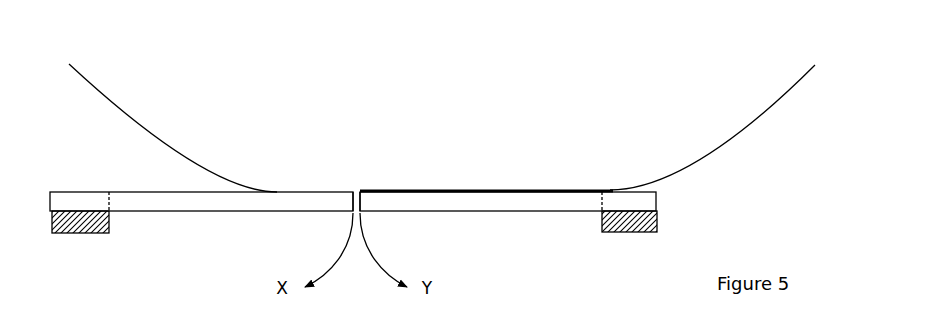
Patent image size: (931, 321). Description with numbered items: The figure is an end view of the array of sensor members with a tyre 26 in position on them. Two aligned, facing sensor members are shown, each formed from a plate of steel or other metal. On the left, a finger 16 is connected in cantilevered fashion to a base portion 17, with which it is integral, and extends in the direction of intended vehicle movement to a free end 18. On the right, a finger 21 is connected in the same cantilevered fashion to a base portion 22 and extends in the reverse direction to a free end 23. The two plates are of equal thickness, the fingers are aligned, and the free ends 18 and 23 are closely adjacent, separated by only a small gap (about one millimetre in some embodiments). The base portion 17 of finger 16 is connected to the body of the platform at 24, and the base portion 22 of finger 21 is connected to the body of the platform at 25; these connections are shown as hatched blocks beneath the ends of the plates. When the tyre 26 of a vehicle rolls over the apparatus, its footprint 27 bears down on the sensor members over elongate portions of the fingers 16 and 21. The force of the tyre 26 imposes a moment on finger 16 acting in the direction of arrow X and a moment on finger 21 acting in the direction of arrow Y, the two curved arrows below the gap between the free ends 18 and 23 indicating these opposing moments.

The fingers 16 is at (192, 203).
The base portion 17 is at (93, 198).
The free end 18 is at (352, 202).
The fingers 21 is at (527, 202).
The base portion 22 is at (617, 204).
The free end 23 is at (362, 202).
The connection of base portion 17 to platform body 24 is at (65, 222).
The connection of base portion 22 to platform body 25 is at (630, 225).
The tyre 26 is at (441, 48).
The footprint 27 is at (527, 188).